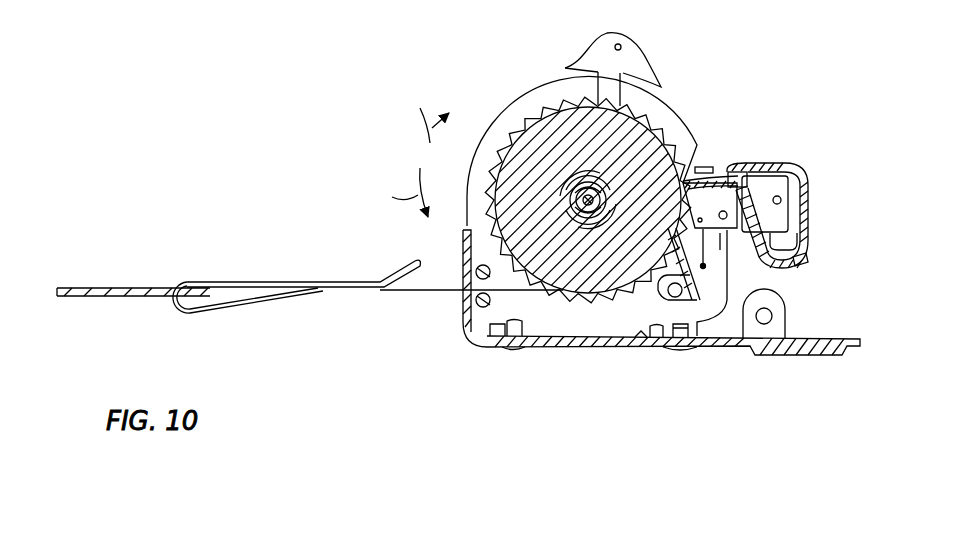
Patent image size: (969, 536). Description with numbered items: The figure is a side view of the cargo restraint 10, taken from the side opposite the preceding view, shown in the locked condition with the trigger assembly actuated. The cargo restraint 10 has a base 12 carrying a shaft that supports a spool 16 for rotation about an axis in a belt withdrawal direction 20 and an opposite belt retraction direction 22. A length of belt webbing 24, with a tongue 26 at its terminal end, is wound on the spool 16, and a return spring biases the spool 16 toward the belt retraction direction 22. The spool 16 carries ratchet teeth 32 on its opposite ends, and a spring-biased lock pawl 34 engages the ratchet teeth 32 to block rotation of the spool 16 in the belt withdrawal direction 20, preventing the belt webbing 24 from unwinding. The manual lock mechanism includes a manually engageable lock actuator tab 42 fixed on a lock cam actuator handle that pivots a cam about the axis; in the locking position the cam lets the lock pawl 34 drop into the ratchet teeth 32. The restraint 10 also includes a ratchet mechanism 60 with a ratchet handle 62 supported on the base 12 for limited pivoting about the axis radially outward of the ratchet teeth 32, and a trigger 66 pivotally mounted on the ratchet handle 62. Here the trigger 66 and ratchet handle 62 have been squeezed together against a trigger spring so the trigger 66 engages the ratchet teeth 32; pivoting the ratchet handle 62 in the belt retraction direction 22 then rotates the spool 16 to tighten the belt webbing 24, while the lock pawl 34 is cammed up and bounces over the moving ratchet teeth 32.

The cargo restraint 10 is at (475, 372).
The base 12 is at (620, 346).
The spool 16 is at (526, 112).
The belt withdrawal direction 20 is at (418, 109).
The belt retraction direction 22 is at (392, 192).
The belt webbing 24 is at (240, 283).
The tongue 26 is at (108, 288).
The ratchet teeth 32 is at (658, 126).
The lock pawl 34 is at (697, 287).
The lock actuator tab 42 is at (651, 57).
The ratchet mechanism 60 is at (757, 143).
The ratchet handle 62 is at (794, 170).
The trigger 66 is at (808, 265).